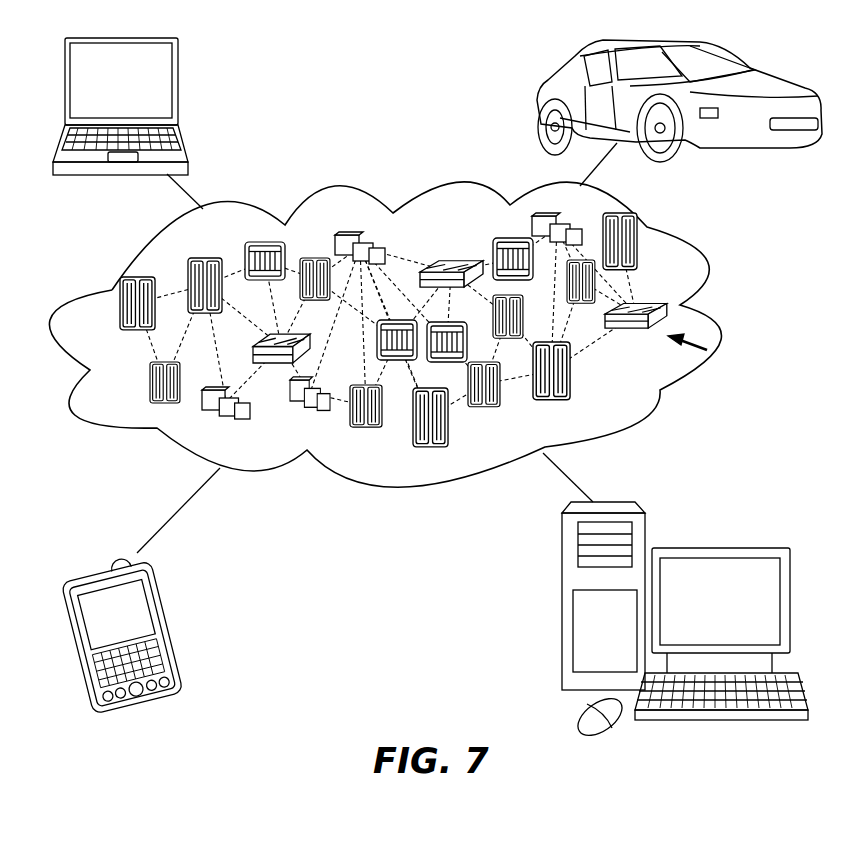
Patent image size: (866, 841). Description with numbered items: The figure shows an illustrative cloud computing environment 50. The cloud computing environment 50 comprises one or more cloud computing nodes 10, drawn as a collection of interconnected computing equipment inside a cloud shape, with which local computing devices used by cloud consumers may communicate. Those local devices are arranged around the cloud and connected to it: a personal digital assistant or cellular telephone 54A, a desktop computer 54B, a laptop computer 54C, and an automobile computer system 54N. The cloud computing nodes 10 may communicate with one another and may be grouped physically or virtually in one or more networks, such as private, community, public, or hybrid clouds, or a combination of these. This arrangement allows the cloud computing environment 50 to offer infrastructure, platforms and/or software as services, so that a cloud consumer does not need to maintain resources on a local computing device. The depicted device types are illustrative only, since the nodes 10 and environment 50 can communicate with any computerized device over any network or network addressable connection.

The cloud computing nodes 10 is at (707, 352).
The cloud computing environment 50 is at (720, 313).
The personal digital assistant or cellular telephone 54A is at (168, 627).
The desktop computer 54B is at (718, 548).
The laptop computer 54C is at (178, 88).
The automobile computer system 54N is at (537, 100).